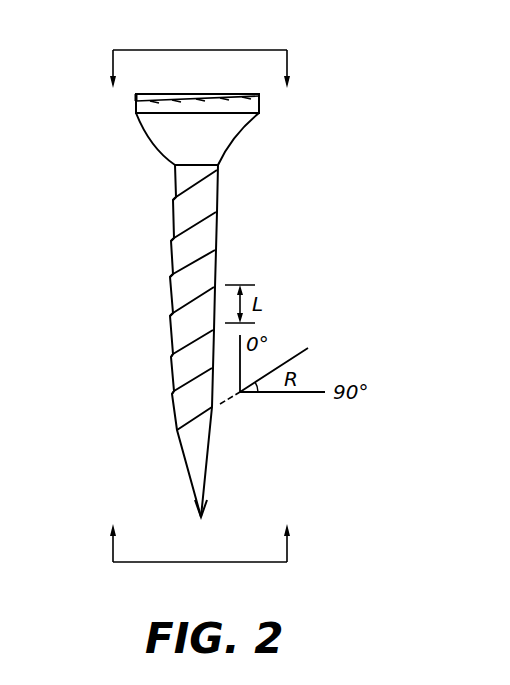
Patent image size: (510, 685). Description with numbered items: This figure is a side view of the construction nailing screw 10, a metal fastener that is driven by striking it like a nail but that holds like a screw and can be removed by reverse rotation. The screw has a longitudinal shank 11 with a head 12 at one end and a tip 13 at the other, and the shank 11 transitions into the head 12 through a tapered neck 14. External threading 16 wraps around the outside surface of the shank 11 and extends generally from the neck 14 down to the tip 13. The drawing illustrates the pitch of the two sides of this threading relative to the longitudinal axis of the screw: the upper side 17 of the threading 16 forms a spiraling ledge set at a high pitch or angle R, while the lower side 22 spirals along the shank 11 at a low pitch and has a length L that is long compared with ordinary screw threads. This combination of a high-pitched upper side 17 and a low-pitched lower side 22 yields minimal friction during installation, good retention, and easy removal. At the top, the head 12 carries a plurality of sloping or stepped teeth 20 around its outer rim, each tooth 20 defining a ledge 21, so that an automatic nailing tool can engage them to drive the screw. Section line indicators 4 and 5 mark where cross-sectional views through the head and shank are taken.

The construction nailing screw 10 is at (272, 292).
The shank 11 is at (181, 334).
The head 12 is at (208, 103).
The tip 13 is at (201, 517).
The tapered neck 14 is at (174, 133).
The external threading 16 is at (178, 380).
The upper side 17 is at (173, 342).
The teeth 20 is at (156, 97).
The ledge 21 is at (202, 94).
The lower side 22 is at (260, 317).
The section line 4- 4 is at (198, 54).
The section line 5- 5 is at (198, 563).